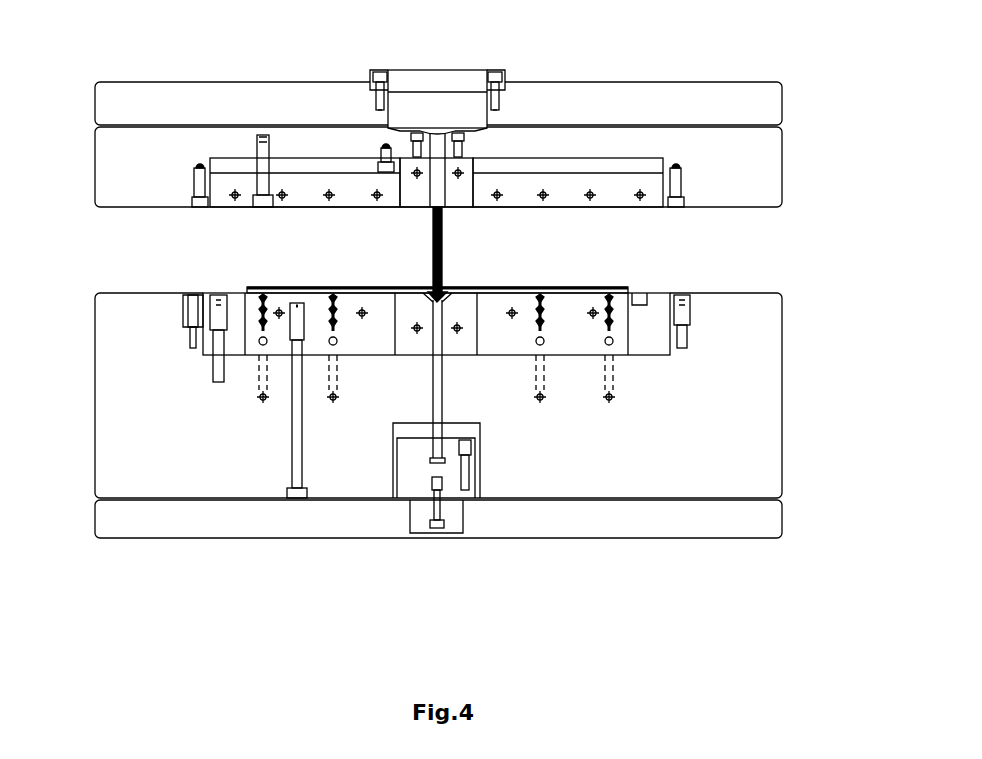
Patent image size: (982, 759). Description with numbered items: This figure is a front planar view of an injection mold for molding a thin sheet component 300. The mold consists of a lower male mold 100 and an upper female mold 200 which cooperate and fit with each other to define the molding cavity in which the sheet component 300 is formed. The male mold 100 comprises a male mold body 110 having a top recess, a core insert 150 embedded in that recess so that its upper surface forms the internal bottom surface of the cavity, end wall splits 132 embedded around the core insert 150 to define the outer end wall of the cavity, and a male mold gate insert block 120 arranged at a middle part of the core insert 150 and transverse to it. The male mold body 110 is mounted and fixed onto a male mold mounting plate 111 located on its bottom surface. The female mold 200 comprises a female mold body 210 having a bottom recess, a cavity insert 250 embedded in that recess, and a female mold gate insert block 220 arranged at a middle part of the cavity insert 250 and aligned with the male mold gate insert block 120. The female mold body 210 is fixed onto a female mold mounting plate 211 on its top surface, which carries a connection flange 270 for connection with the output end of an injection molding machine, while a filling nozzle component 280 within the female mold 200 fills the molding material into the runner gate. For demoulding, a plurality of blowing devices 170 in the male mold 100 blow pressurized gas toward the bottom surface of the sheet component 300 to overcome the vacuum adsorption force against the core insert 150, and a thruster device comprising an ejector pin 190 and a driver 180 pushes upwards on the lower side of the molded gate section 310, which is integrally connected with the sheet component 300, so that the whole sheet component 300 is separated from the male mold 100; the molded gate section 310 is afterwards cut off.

The male mold 100 is at (452, 407).
The male mold body 110 is at (100, 418).
The male mold mounting plate 111 is at (100, 522).
The male mold gate insert block 120 is at (458, 340).
The end wall split 132 is at (238, 317).
The core insert 150 is at (367, 340).
The blowing device 170 is at (263, 400).
The driver 180 is at (412, 482).
The ejector pin 190 is at (437, 392).
The female mold 200 is at (449, 133).
The female mold body 210 is at (104, 173).
The female mold mounting plate 211 is at (112, 108).
The female mold gate insert block 220 is at (418, 200).
The cavity insert 250 is at (247, 200).
The connection flange 270 is at (455, 80).
The filling nozzle component 280 is at (428, 135).
The sheet component 300 is at (325, 290).
The molded gate section 310 is at (443, 280).